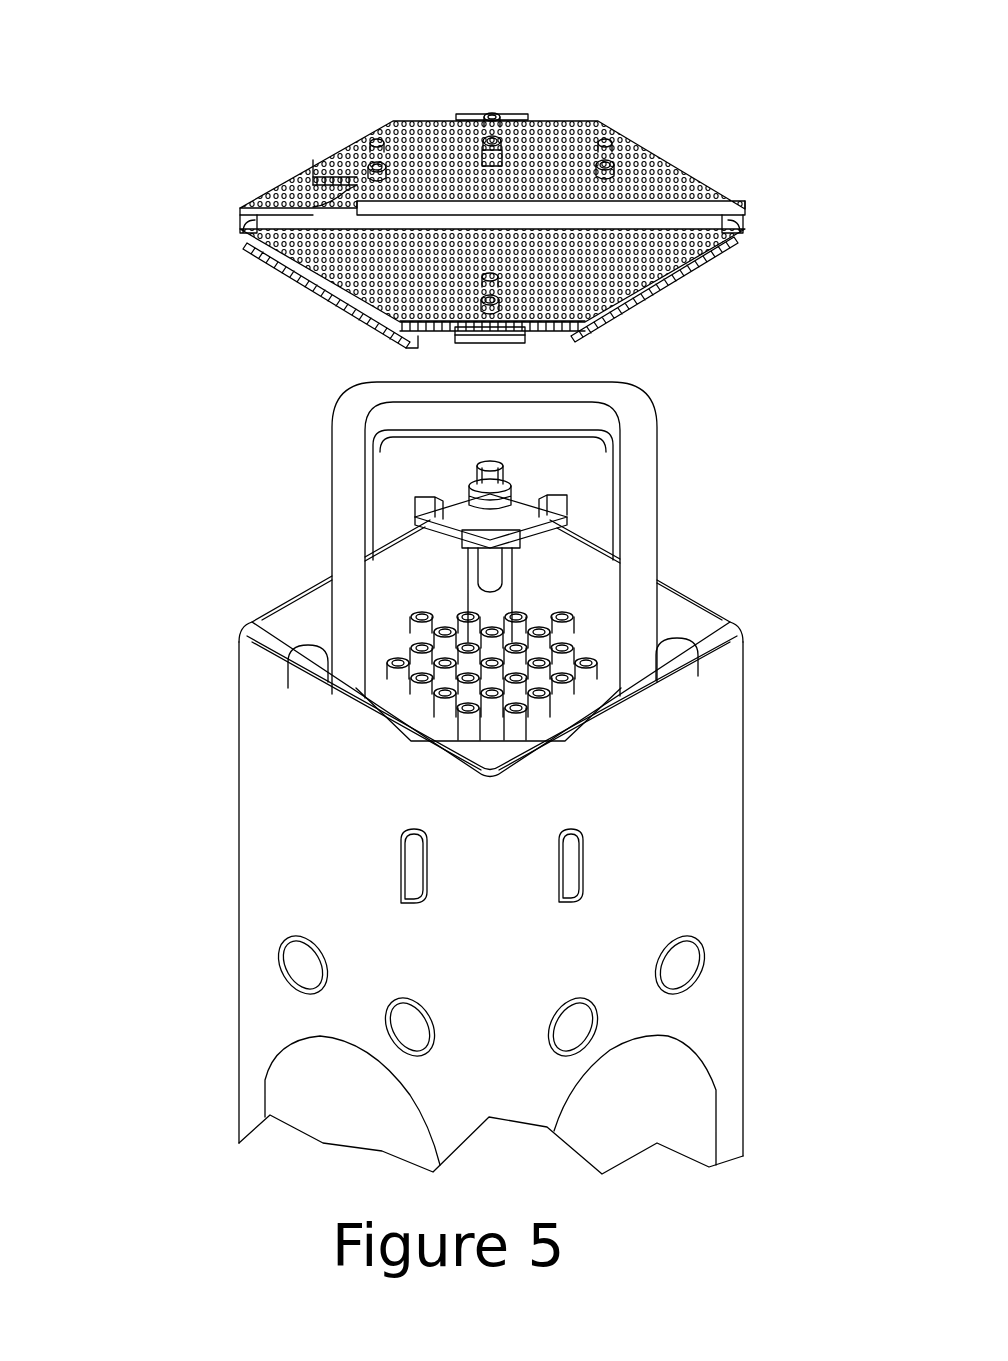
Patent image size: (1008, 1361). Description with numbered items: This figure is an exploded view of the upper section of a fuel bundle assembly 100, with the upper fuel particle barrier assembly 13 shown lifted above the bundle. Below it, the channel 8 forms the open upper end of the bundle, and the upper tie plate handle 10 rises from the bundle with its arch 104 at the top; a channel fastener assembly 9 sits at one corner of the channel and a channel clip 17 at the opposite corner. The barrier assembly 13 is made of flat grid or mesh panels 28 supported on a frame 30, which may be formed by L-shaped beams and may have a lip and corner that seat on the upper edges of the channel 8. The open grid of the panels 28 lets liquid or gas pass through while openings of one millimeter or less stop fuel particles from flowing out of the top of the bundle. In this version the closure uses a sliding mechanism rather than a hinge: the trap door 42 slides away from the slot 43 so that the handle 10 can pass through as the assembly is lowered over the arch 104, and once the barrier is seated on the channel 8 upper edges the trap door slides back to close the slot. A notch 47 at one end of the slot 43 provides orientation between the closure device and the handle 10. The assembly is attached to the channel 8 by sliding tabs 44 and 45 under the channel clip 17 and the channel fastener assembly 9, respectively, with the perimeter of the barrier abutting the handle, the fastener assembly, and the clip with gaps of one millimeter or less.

The fuel bundle assembly 100 is at (148, 492).
The channel 8 is at (746, 745).
The channel fastener assembly 9 is at (532, 476).
The upper tie plate handle 10 is at (330, 508).
The arch 104 is at (567, 386).
The upper fuel particle barrier assembly 13 is at (529, 296).
The channel clip 17 is at (504, 752).
The flat grid or mesh panels 28 is at (500, 113).
The frame 30 is at (404, 334).
The trap door 42 is at (405, 141).
The slot 43 is at (404, 224).
The sliding tab 44 is at (451, 345).
The sliding tab 45 is at (465, 110).
The notch 47 is at (335, 211).